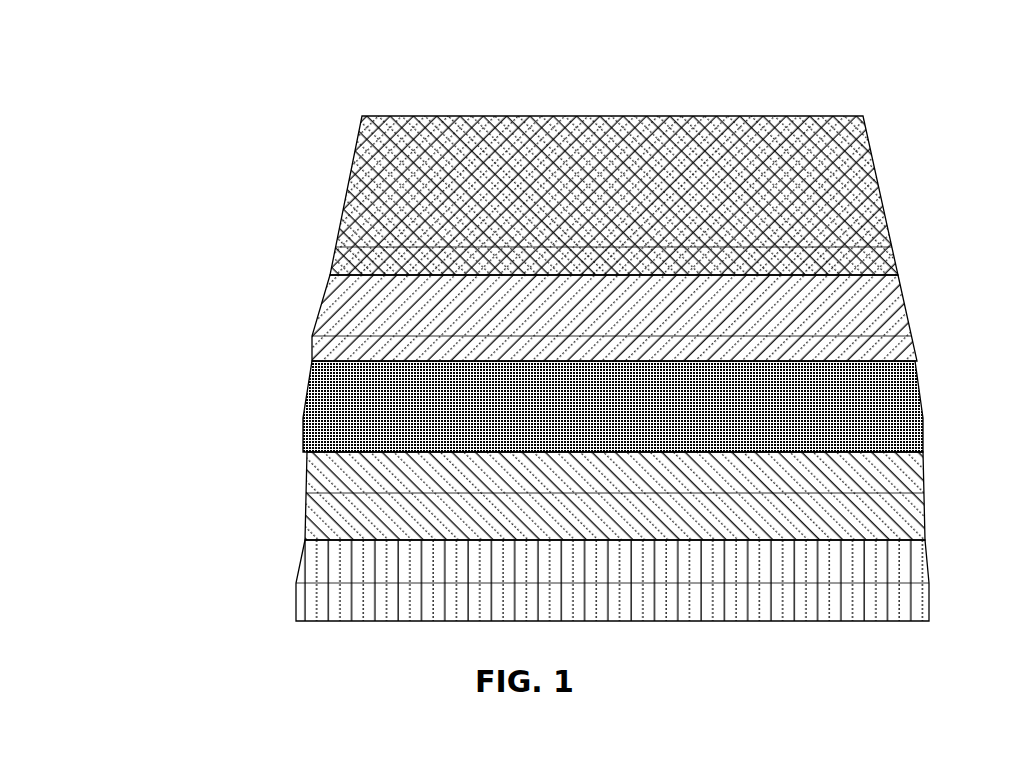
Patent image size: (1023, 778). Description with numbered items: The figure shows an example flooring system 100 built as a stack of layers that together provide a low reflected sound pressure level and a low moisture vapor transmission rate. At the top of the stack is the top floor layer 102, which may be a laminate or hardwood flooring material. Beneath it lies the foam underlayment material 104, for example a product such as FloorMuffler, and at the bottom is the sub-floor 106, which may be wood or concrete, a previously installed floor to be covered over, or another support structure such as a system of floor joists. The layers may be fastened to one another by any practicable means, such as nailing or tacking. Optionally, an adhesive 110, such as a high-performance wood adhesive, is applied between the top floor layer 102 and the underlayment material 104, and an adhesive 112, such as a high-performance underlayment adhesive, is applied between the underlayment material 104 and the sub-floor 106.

The flooring system 100 is at (294, 49).
The top floor layer 102 is at (582, 103).
The adhesive 110 is at (921, 315).
The foam underlayment material 104 is at (285, 398).
The adhesive 112 is at (287, 503).
The sub-floor 106 is at (833, 637).